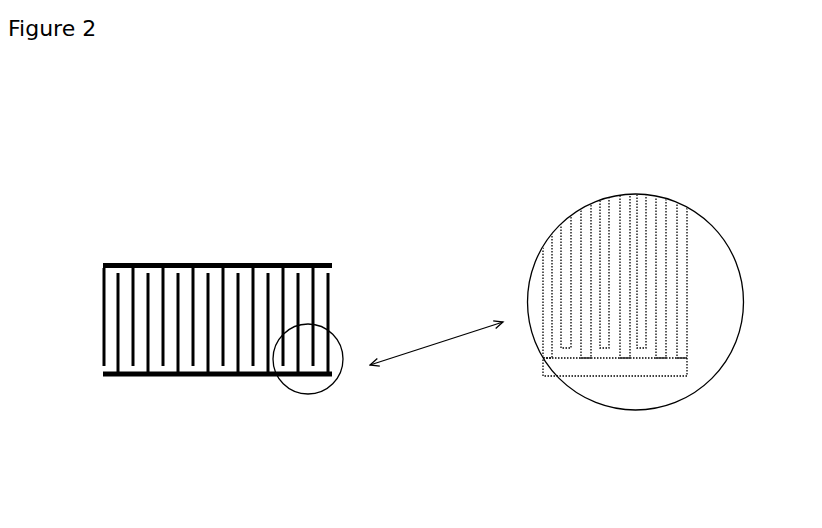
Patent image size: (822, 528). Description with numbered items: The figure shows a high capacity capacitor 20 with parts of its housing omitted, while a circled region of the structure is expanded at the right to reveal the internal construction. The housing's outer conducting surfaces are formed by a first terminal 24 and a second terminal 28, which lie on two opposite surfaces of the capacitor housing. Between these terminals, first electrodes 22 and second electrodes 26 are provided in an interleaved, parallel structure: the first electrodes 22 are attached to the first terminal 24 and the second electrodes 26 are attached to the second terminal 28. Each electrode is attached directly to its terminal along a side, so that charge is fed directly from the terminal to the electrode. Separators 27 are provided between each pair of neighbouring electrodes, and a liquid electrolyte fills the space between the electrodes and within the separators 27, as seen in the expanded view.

The capacitor 20 is at (220, 303).
The first electrodes 22 is at (235, 367).
The first terminal 24 is at (263, 385).
The second electrodes 26 is at (185, 281).
The separators 27 is at (655, 350).
The second terminal 28 is at (282, 257).